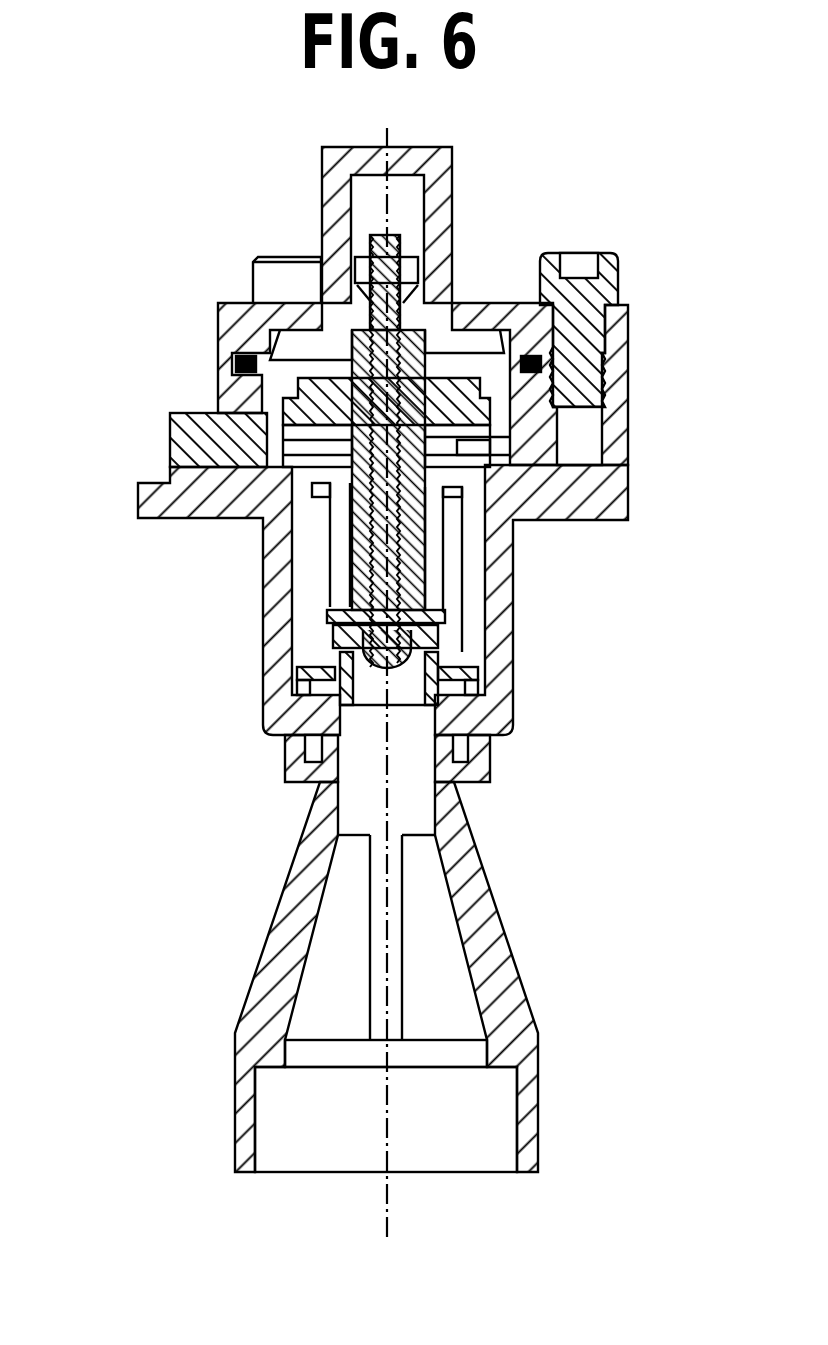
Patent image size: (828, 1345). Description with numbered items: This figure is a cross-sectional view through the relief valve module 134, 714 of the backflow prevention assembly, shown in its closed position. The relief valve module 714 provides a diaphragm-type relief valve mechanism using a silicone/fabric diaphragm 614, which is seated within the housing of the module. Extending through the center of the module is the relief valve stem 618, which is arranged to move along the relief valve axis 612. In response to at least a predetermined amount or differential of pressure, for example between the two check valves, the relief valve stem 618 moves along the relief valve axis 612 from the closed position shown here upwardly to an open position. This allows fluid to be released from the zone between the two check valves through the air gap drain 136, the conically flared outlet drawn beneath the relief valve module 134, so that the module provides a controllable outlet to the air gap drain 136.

The relief valve module 134 is at (352, 451).
The air gap drain 136 is at (295, 925).
The relief valve axis 612 is at (390, 1218).
The silicone/fabric diaphragm 614 is at (228, 358).
The relief valve stem 618 is at (358, 550).
The relief valve module 714 is at (283, 440).